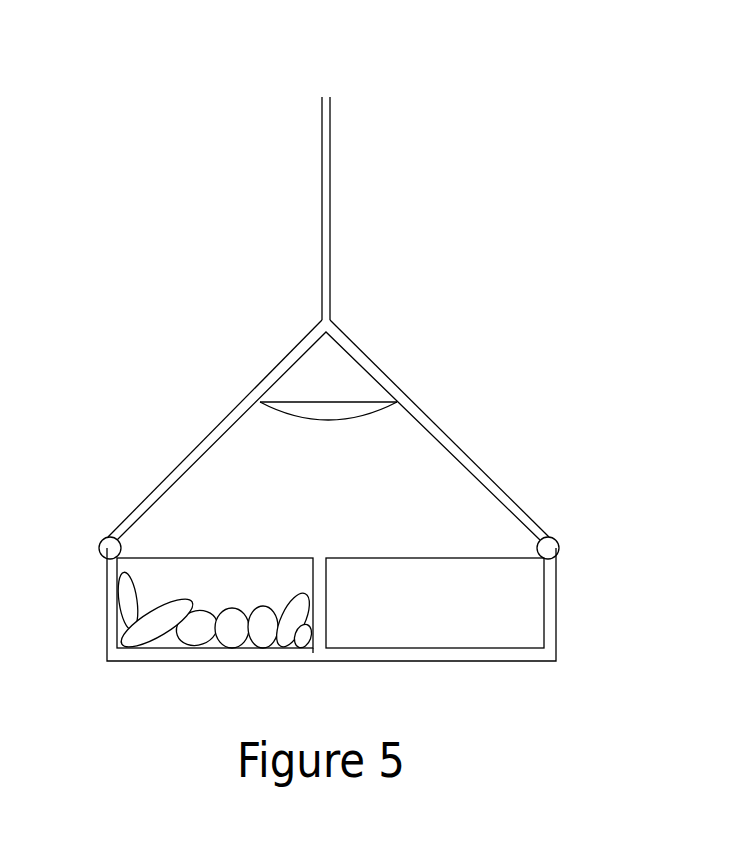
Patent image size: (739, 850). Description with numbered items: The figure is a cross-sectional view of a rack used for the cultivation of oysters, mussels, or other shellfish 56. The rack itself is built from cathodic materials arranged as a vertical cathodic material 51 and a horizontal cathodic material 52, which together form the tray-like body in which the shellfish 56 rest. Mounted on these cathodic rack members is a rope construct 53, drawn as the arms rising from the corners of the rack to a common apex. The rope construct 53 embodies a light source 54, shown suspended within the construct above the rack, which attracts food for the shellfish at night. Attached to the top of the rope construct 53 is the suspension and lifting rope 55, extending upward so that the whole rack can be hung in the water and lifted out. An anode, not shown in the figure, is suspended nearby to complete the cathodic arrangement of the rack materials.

The vertical cathodic material 51 is at (108, 577).
The horizontal cathodic material 52 is at (422, 653).
The rope construct 53 is at (473, 465).
The light source 54 is at (343, 410).
The suspension and lifting rope 55 is at (322, 257).
The shellfish 56 is at (215, 611).